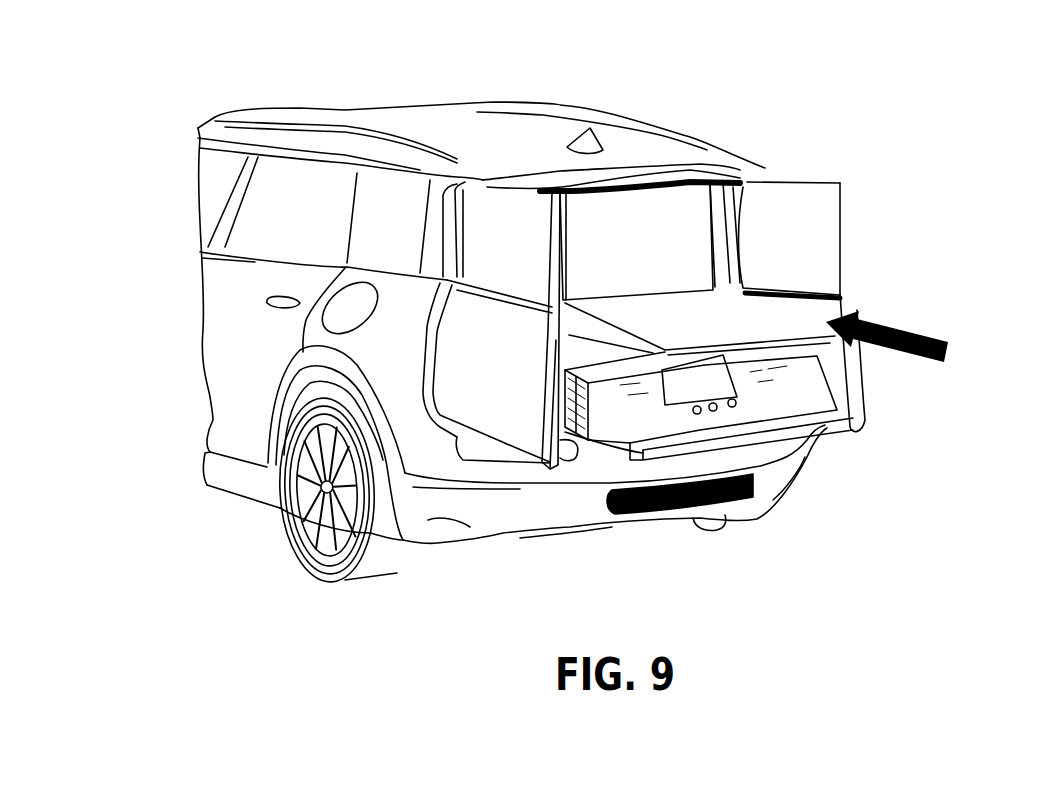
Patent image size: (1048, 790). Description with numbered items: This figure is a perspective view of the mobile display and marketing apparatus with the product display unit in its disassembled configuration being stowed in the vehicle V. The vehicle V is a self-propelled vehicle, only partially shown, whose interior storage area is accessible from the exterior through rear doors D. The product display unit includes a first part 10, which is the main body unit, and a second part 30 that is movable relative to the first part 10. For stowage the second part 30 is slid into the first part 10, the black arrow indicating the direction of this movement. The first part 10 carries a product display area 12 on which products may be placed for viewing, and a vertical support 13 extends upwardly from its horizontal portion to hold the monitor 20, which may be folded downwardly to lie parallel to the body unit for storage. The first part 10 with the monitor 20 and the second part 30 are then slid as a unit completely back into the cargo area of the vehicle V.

The first part 10 is at (548, 348).
The product display area 12 is at (623, 410).
The vertical support 13 is at (670, 250).
The monitor 20 is at (753, 327).
The second part 30 is at (832, 438).
The rear doors D is at (865, 373).
The vehicle V is at (197, 413).